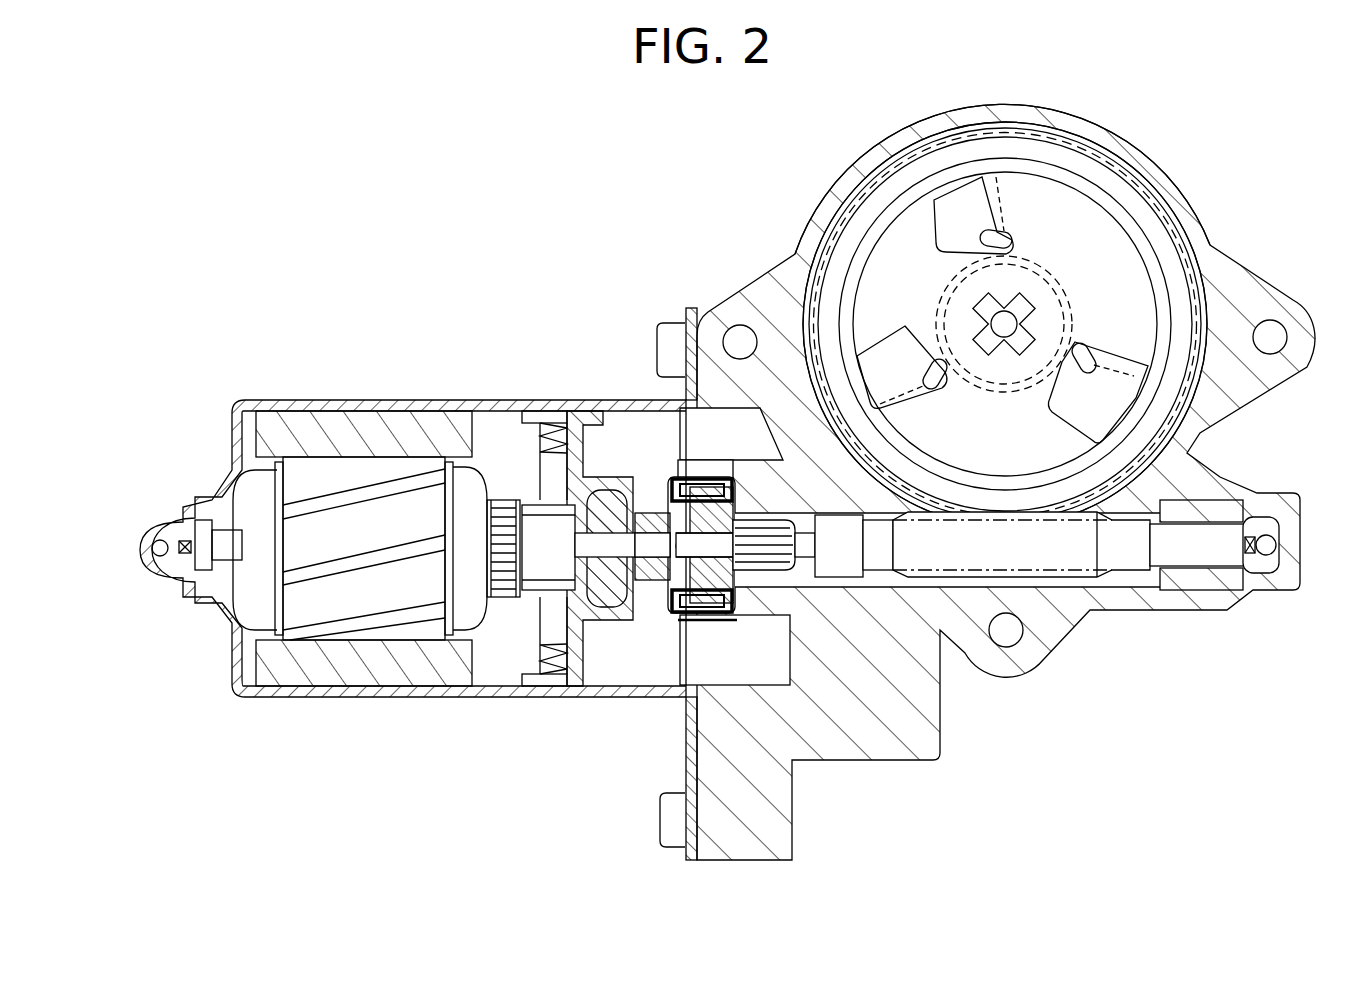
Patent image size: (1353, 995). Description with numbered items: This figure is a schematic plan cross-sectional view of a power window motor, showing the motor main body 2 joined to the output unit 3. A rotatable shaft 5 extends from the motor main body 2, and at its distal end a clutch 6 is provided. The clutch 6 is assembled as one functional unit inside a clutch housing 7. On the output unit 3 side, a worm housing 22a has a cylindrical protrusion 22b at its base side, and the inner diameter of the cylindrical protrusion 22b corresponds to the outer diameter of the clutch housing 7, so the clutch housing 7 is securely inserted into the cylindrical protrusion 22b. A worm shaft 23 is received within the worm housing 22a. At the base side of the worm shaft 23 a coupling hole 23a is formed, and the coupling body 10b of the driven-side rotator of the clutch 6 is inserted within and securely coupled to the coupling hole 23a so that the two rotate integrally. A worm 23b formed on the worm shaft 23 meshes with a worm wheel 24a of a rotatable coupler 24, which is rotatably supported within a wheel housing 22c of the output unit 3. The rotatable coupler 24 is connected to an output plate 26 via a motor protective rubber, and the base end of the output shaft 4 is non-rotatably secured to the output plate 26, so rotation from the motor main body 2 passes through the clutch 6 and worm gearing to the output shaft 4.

The motor main body 2 is at (452, 716).
The output unit 3 is at (1120, 694).
The output shaft 4 is at (1007, 350).
The rotatable shaft 5 is at (587, 550).
The clutch 6 is at (661, 470).
The clutch housing 7 is at (710, 468).
The coupling body 10b is at (805, 535).
The worm housing 22a is at (1190, 603).
The cylindrical protrusion 22b is at (717, 627).
The wheel housing 22c is at (1070, 118).
The worm shaft 23 is at (877, 558).
The coupling hole 23a is at (760, 568).
The worm 23b is at (1047, 578).
The rotatable coupler 24 is at (1152, 230).
The worm wheel 24a is at (857, 180).
The output plate 26 is at (888, 252).